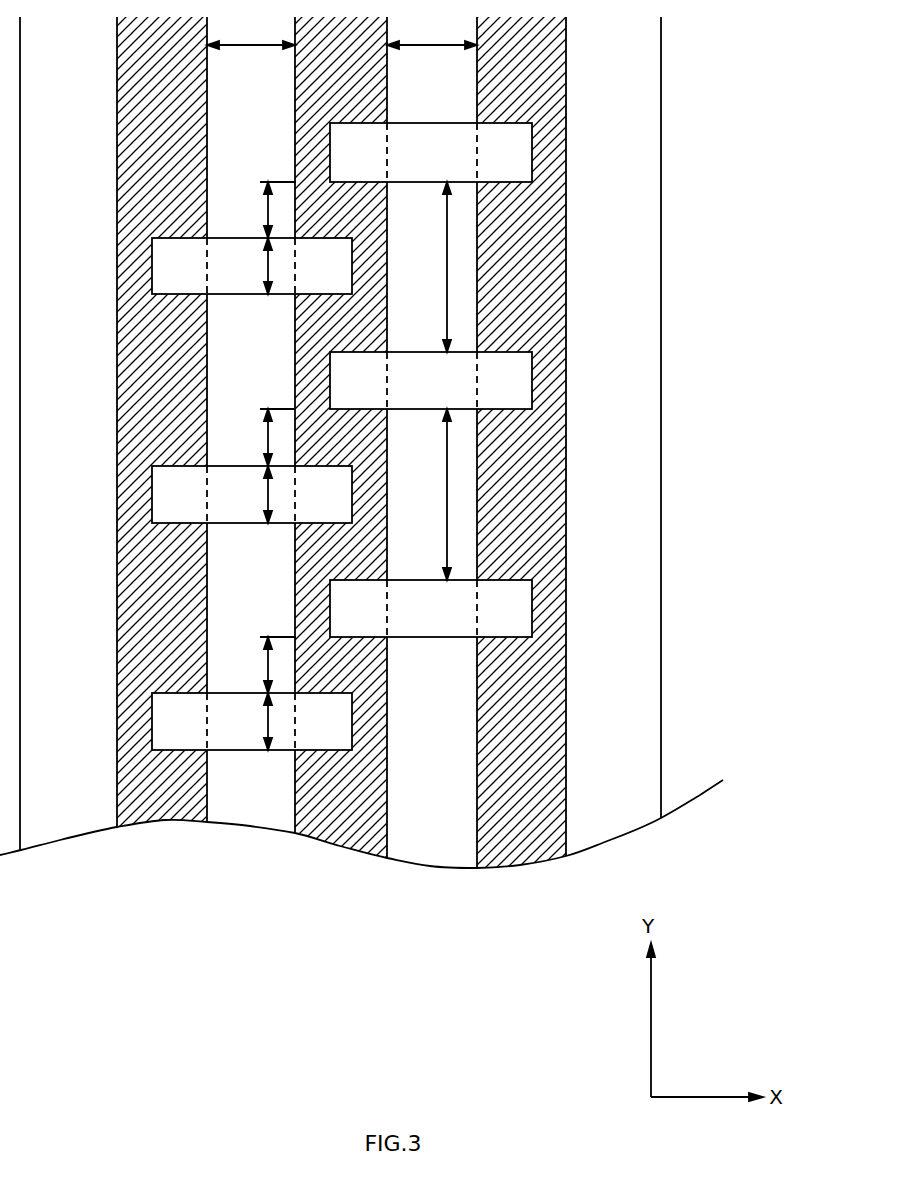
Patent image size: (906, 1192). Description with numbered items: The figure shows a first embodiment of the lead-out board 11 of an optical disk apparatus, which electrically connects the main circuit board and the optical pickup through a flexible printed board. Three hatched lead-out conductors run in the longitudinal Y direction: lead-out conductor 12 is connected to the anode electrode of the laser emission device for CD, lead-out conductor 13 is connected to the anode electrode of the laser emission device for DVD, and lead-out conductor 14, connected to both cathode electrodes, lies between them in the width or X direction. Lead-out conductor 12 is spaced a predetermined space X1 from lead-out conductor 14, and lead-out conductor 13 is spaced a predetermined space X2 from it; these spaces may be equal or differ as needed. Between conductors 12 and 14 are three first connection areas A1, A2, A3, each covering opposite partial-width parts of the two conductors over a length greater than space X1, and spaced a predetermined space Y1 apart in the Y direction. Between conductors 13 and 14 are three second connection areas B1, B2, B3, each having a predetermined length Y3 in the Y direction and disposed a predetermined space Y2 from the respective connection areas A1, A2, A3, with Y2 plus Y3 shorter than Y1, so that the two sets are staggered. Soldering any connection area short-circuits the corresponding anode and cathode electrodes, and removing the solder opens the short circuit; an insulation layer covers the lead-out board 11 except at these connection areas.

The lead-out board 11 is at (640, 212).
The lead-out conductor 12 is at (518, 851).
The lead-out conductor 13 is at (160, 822).
The lead-out conductor 14 is at (335, 846).
The first connection area A1 is at (522, 157).
The first connection area A2 is at (520, 386).
The first connection area A3 is at (520, 613).
The second connection area B1 is at (162, 262).
The second connection area B2 is at (162, 490).
The second connection area B3 is at (162, 717).
The predetermined space X1 is at (432, 35).
The predetermined space X2 is at (251, 35).
The predetermined space Y1 is at (434, 381).
The predetermined space Y2 is at (265, 437).
The predetermined length Y3 is at (253, 494).